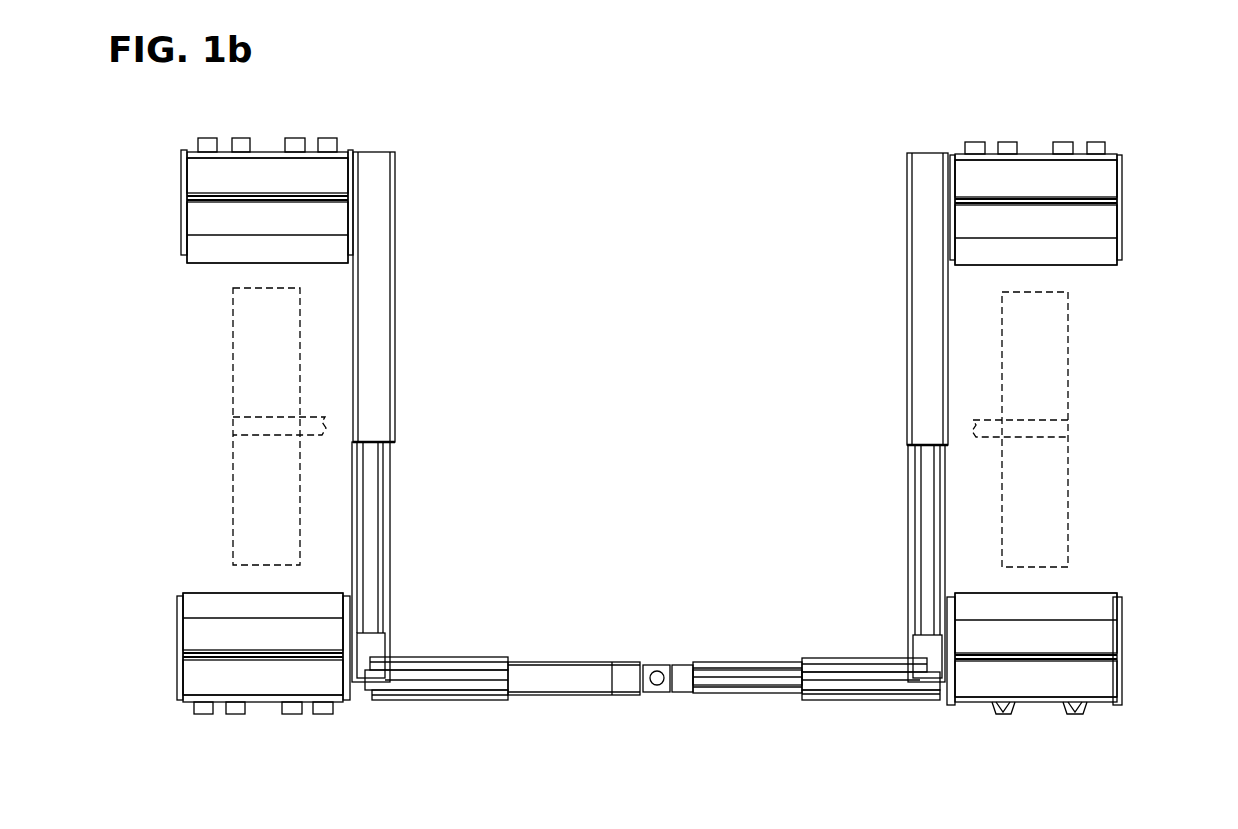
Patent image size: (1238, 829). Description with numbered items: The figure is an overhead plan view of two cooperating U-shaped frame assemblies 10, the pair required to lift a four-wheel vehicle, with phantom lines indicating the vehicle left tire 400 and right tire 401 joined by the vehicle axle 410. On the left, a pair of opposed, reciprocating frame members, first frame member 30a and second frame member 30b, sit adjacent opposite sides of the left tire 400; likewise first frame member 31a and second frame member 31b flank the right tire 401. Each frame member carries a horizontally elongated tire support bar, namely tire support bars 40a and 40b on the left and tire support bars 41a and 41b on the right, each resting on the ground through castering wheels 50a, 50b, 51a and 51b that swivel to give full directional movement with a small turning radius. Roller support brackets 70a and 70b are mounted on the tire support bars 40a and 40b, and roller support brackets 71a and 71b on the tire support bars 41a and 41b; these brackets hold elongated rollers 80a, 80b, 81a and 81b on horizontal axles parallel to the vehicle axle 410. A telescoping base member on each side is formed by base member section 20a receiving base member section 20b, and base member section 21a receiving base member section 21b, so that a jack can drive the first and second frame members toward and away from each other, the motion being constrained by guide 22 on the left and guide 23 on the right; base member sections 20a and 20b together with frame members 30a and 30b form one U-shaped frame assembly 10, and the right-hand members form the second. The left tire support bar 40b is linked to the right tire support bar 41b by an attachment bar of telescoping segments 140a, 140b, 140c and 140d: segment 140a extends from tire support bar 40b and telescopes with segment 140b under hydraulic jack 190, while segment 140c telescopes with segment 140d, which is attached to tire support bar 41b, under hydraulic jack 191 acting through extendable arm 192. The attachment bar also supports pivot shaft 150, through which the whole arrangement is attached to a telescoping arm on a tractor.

The U-shaped frame assembly 10 is at (582, 162).
The base member section 20a is at (396, 312).
The base member section 20b is at (414, 562).
The base member section 21a is at (906, 313).
The base member section 21b is at (887, 563).
The guide 22 is at (374, 545).
The guide 23 is at (918, 560).
The first frame member 30a is at (224, 232).
The second frame member 30b is at (220, 621).
The first frame member 31a is at (1079, 233).
The second frame member 31b is at (1079, 621).
The tire support bar 40a is at (195, 175).
The tire support bar 40b is at (190, 680).
The tire support bar 41a is at (1110, 175).
The tire support bar 41b is at (1105, 683).
The castering wheels 50a is at (290, 138).
The castering wheels 50b is at (235, 715).
The castering wheels 51a is at (1065, 140).
The castering wheels 51b is at (1082, 713).
The roller support brackets 70a is at (183, 150).
The roller support brackets 70b is at (180, 705).
The roller support brackets 71a is at (952, 152).
The roller support brackets 71b is at (950, 705).
The elongated roller 80a is at (207, 222).
The elongated roller 80b is at (205, 632).
The elongated roller 81a is at (1097, 222).
The elongated roller 81b is at (1090, 632).
The telescoping segment 140a is at (446, 709).
The telescoping segment 140b is at (560, 700).
The telescoping segment 140c is at (737, 682).
The telescoping segment 140d is at (856, 710).
The pivot shaft 150 is at (658, 692).
The hydraulic jack 190 is at (470, 680).
The hydraulic jack 191 is at (830, 680).
The extendable arm 192 is at (713, 678).
The left tire 400 is at (233, 485).
The right tire 401 is at (1070, 485).
The vehicle axle 410 is at (234, 426).